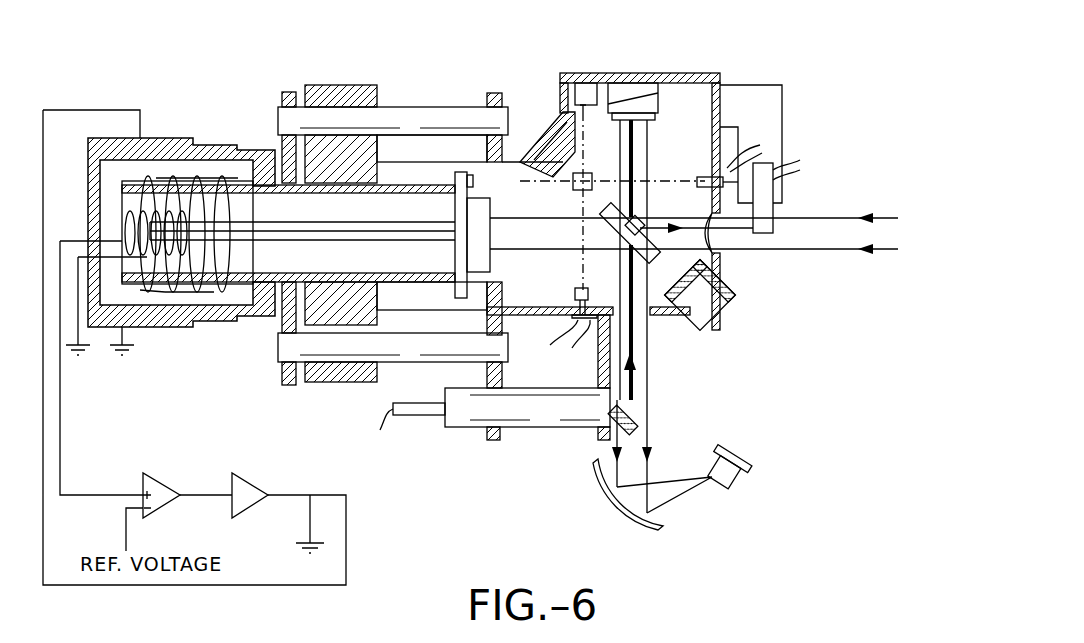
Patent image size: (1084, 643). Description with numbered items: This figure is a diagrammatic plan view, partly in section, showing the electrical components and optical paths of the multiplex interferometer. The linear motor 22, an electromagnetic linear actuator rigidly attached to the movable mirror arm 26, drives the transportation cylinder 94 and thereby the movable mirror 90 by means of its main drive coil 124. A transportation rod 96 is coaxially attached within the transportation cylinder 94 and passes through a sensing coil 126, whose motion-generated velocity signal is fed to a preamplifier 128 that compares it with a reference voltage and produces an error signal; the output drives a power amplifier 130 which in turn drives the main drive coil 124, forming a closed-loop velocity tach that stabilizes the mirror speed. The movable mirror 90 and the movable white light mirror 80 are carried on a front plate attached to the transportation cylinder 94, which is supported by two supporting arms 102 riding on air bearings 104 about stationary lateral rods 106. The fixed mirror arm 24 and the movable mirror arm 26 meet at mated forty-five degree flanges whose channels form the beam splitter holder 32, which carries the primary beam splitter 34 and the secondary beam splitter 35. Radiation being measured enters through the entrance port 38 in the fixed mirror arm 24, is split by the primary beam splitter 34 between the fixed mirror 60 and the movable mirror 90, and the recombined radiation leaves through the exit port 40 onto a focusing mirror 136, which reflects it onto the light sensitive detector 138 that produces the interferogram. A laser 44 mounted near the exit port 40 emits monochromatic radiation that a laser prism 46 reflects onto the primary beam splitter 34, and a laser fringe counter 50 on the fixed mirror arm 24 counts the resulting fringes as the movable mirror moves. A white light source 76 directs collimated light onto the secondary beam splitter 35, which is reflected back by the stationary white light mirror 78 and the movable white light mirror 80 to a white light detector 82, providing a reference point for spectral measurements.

The linear motor 22 is at (190, 120).
The fixed mirror arm 24 is at (800, 112).
The movable mirror arm 26 is at (471, 86).
The beam splitter holder 32 is at (713, 318).
The primary beam splitter 34 is at (651, 262).
The secondary beam splitter 35 is at (586, 173).
The entrance port 38 is at (718, 250).
The exit port 40 is at (640, 312).
The laser 44 is at (564, 428).
The laser prism 46 is at (640, 405).
The laser fringe counter 50 is at (775, 210).
The fixed mirror 60 is at (628, 105).
The white light source 76 is at (585, 322).
The stationary white light mirror 78 is at (560, 108).
The movable white light mirror 80 is at (474, 186).
The white light detector 82 is at (705, 177).
The movable mirror 90 is at (492, 266).
The transportation cylinder 94 is at (402, 193).
The transportation rod 96 is at (355, 233).
The supporting arms 102 is at (370, 172).
The air bearing 104 is at (320, 84).
The lateral rods 106 is at (420, 100).
The main drive coil 124 is at (176, 292).
The sensing coil 126 is at (136, 218).
The preamplifier 128 is at (160, 487).
The power amplifier 130 is at (250, 487).
The focusing mirror 136 is at (620, 503).
The light sensitive detector 138 is at (746, 470).